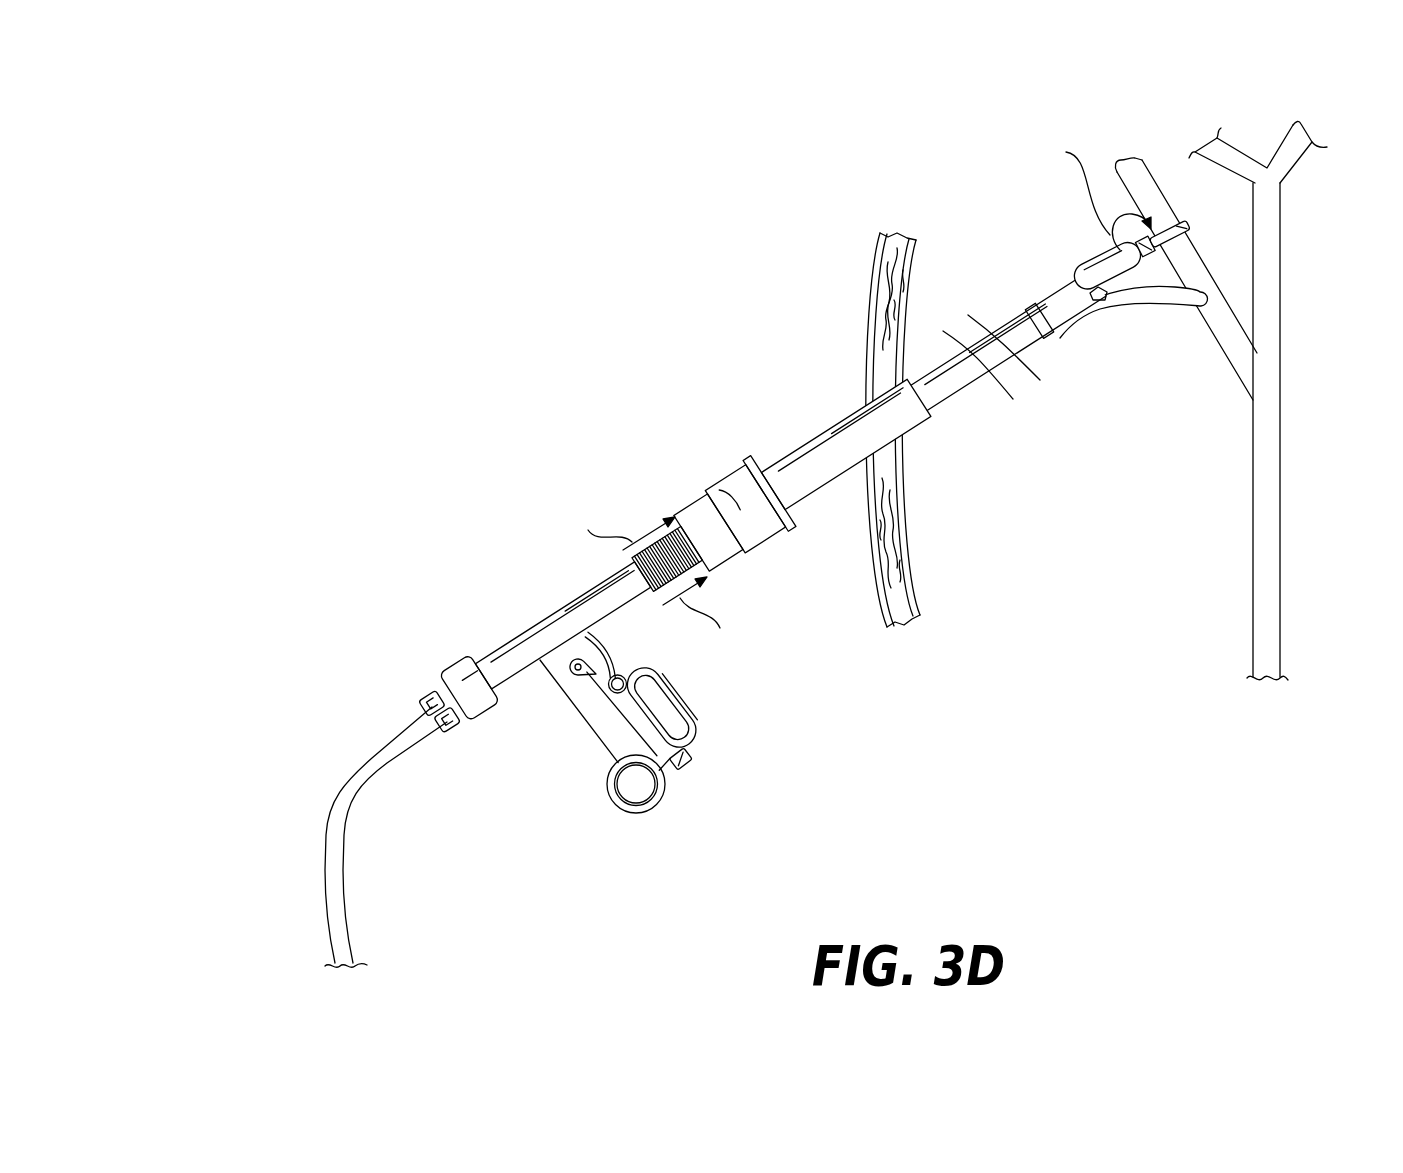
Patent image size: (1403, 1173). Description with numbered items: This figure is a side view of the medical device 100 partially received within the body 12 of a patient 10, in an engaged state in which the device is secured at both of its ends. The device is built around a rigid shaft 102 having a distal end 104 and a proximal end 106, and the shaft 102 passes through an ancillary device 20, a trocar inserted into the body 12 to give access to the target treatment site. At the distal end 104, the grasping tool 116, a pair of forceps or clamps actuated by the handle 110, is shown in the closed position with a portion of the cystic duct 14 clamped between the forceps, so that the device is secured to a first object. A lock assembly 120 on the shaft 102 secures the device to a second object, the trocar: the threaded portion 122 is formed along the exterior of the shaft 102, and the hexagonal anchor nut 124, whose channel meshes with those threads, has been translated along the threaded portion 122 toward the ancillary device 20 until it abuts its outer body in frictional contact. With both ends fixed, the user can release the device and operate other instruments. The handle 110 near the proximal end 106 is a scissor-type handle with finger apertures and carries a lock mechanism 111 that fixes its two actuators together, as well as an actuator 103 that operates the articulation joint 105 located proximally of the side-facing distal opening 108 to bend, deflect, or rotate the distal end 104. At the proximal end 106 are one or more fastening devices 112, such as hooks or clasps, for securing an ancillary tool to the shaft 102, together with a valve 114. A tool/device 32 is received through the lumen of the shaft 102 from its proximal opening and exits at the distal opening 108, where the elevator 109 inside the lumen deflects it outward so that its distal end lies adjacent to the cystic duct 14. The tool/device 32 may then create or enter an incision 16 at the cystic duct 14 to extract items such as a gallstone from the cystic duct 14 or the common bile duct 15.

The patient 10 is at (888, 212).
The body 12 is at (875, 268).
The cystic duct 14 is at (1248, 320).
The common bile duct 15 is at (1253, 134).
The incision 16 is at (1195, 316).
The ancillary device 20 is at (745, 500).
The tool/device 32 is at (320, 799).
The medical device 100 is at (462, 520).
The shaft 102 is at (576, 605).
The actuator 103 is at (617, 675).
The distal end 104 is at (1080, 233).
The articulation joint 105 is at (1025, 308).
The proximal end 106 is at (488, 746).
The distal opening 108 is at (1055, 305).
The elevator 109 is at (1099, 303).
The handle 110 is at (612, 820).
The lock mechanism 111 is at (697, 757).
The fastening devices 112 is at (413, 692).
The valve 114 is at (454, 657).
The grasping tool 116 is at (1169, 197).
The lock assembly 120 is at (644, 510).
The threaded portion 122 is at (655, 600).
The anchor nut 124 is at (728, 565).